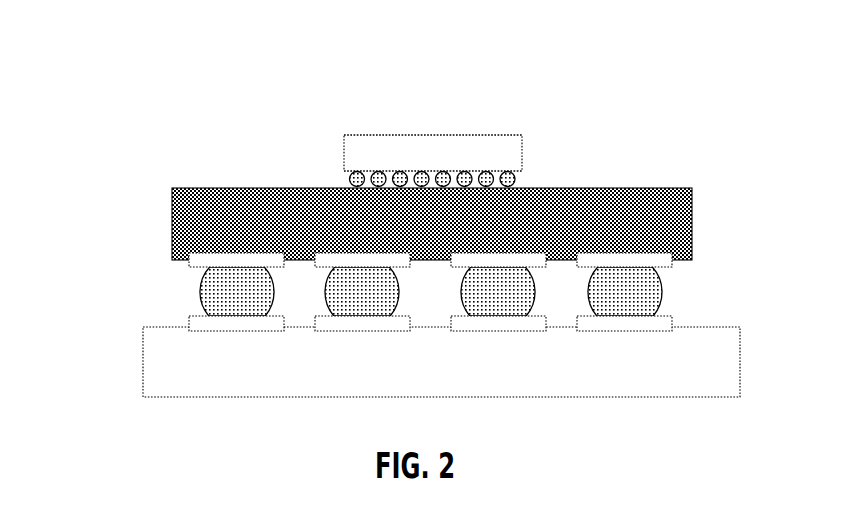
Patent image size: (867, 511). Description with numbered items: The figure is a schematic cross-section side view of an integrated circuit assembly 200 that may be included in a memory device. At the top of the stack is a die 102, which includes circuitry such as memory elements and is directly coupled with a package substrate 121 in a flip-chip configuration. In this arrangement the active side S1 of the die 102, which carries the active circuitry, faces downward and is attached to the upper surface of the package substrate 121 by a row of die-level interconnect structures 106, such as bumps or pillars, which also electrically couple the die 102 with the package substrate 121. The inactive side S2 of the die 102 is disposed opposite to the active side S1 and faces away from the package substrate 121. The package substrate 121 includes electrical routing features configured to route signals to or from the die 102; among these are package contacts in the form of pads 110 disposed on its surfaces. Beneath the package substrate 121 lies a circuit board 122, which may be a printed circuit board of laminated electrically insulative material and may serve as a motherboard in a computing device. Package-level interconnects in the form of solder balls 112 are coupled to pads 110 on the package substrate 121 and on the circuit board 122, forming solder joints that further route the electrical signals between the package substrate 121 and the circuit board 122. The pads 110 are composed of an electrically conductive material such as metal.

The integrated circuit assembly 200 is at (672, 62).
The die 102 is at (390, 161).
The die-level interconnect structures 106 is at (350, 181).
The pads 110 is at (197, 270).
The solder balls 112 is at (202, 293).
The package substrate 121 is at (448, 235).
The circuit board 122 is at (448, 373).
The active side S1 is at (525, 170).
The inactive side S2 is at (524, 133).